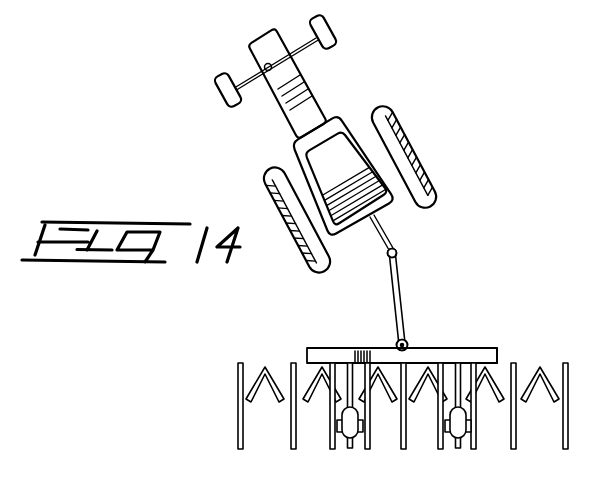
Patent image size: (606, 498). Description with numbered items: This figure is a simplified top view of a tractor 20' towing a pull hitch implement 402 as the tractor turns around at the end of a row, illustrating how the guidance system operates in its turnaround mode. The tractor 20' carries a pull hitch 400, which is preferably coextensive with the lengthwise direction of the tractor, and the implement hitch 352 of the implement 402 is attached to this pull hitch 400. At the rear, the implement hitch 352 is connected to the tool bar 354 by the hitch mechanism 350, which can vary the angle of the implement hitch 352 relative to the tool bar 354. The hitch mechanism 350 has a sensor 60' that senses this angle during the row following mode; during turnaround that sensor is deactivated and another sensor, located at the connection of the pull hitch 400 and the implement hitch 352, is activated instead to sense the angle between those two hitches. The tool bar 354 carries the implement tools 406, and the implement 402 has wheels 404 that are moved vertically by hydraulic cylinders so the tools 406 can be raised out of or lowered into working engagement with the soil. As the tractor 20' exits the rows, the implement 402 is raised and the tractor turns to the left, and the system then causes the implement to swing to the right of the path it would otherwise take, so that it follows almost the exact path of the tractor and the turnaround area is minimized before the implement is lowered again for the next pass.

The tractor 20' is at (326, 144).
The pull hitch 400 is at (395, 250).
The implement hitch 352 is at (400, 293).
The hitch mechanism 350 is at (443, 330).
The sensor 60' is at (381, 330).
The implement 402 is at (337, 343).
The tool bar 354 is at (471, 351).
The implement tools 406 is at (269, 371).
The wheels 404 is at (346, 438).